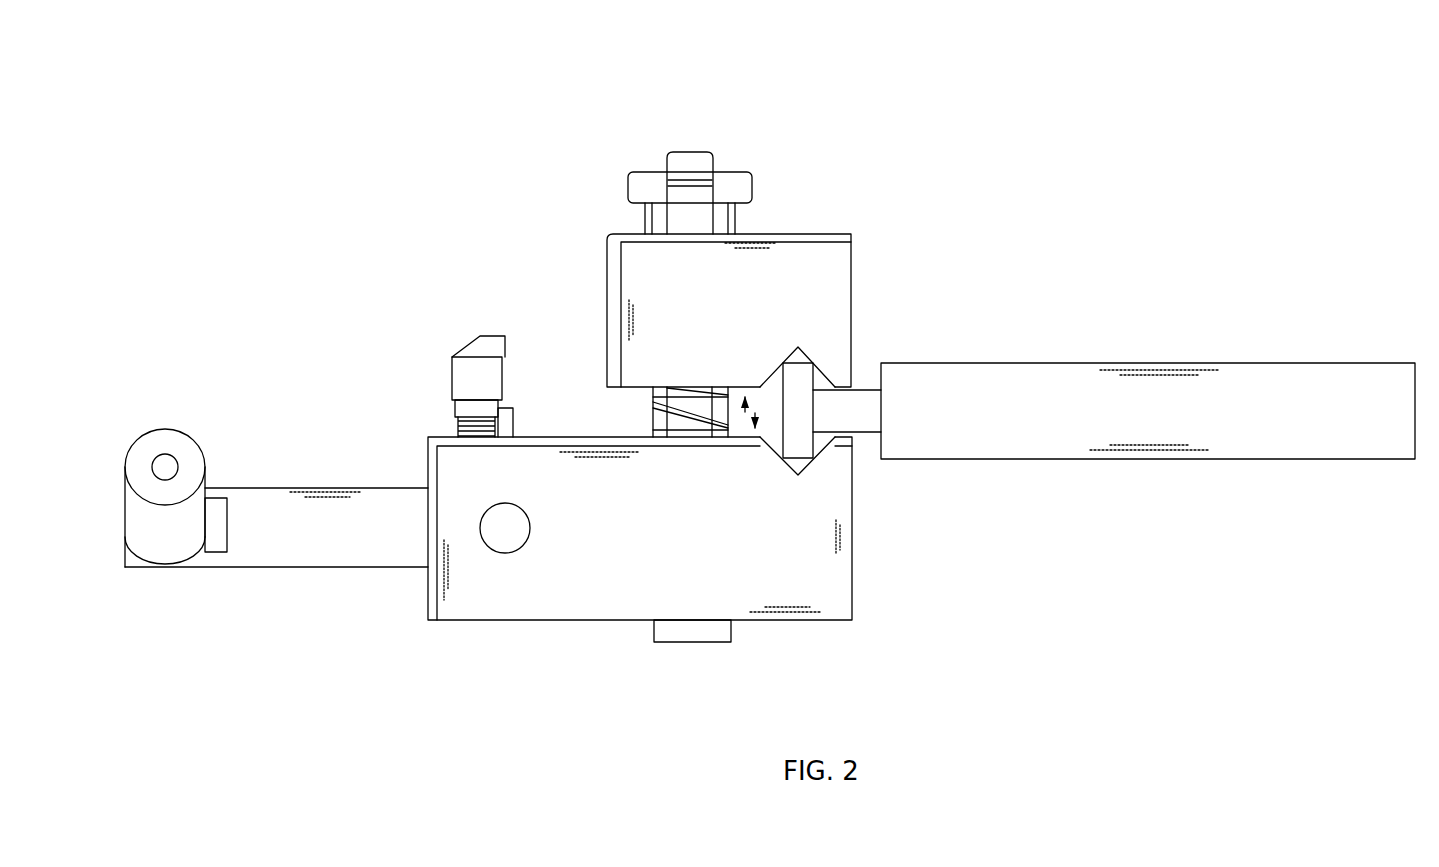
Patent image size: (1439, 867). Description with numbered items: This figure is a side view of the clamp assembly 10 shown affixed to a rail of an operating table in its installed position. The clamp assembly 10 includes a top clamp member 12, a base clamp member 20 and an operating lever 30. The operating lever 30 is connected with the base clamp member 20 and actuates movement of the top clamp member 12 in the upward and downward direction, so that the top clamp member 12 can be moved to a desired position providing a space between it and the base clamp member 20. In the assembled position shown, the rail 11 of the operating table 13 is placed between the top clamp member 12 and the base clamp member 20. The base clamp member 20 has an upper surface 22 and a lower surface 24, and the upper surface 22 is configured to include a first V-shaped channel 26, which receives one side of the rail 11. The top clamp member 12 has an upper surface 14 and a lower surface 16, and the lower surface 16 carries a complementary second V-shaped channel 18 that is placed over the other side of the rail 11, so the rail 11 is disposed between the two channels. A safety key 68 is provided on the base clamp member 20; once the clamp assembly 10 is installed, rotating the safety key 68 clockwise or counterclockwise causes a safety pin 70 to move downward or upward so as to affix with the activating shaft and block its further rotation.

The clamp assembly 10 is at (449, 152).
The rail 11 is at (802, 426).
The top clamp member 12 is at (835, 278).
The operating table 13 is at (1262, 383).
The upper surface 14 is at (785, 226).
The lower surface 16 is at (745, 413).
The second V-shaped channel 18 is at (803, 357).
The base clamp member 20 is at (837, 582).
The upper surface 22 is at (760, 402).
The lower surface 24 is at (755, 628).
The first V-shaped channel 26 is at (800, 472).
The operating lever 30 is at (158, 380).
The safety key 68 is at (493, 345).
The safety pin 70 is at (460, 422).